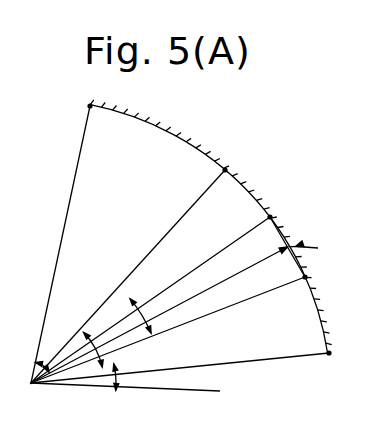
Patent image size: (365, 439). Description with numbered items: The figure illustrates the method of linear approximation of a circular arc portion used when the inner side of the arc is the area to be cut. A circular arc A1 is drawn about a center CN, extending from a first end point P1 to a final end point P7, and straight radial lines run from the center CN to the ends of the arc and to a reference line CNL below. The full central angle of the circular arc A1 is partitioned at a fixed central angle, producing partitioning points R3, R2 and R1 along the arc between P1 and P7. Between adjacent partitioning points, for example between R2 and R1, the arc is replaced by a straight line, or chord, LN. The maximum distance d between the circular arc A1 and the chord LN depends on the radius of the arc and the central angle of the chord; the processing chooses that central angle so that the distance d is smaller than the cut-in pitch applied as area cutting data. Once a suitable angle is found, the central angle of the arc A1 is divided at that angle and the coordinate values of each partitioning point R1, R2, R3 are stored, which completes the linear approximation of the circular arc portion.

The center of curvature CN is at (29, 399).
The first end point of arc P1 is at (64, 233).
The last end point of arc P7 is at (195, 363).
The circular arc A1 is at (166, 127).
The partitioning point R1 is at (186, 322).
The partitioning point R2 is at (167, 289).
The partitioning point R3 is at (146, 265).
The straight line (chord) LN is at (281, 236).
The maximum distance d is at (314, 251).
The reference line through center CNL is at (238, 363).